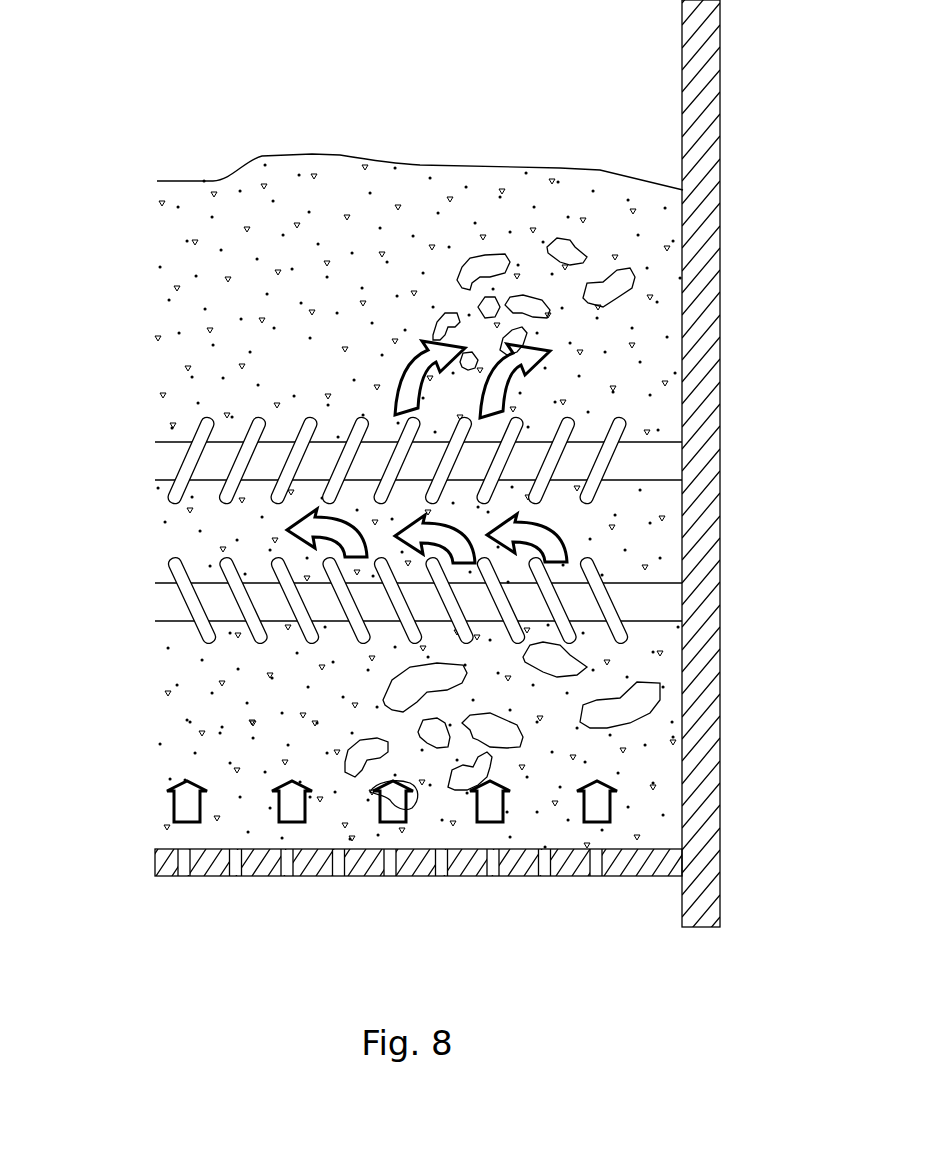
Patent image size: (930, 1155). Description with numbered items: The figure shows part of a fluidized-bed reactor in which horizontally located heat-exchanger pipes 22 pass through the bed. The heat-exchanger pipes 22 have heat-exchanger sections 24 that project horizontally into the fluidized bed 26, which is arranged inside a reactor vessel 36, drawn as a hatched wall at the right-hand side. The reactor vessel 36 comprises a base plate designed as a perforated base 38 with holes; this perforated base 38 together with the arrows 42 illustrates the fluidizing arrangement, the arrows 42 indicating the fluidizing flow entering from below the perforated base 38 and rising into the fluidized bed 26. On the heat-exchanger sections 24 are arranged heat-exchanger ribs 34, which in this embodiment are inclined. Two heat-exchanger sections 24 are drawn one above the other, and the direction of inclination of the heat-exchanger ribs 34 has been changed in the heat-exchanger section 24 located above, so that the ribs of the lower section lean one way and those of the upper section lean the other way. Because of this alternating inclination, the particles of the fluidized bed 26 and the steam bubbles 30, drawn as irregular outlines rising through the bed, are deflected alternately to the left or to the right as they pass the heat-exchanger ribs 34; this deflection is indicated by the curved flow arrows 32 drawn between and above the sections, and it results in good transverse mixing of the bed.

The heat-exchanger pipes 22 is at (425, 535).
The heat-exchanger sections 24 is at (654, 461).
The fluidized bed 26 is at (345, 207).
The steam bubbles 30 is at (605, 280).
The flow arrows 32 is at (398, 380).
The heat-exchanger ribs 34 is at (205, 428).
The reactor vessel 36 is at (708, 137).
The perforated base 38 is at (630, 880).
The arrows 42 is at (275, 815).